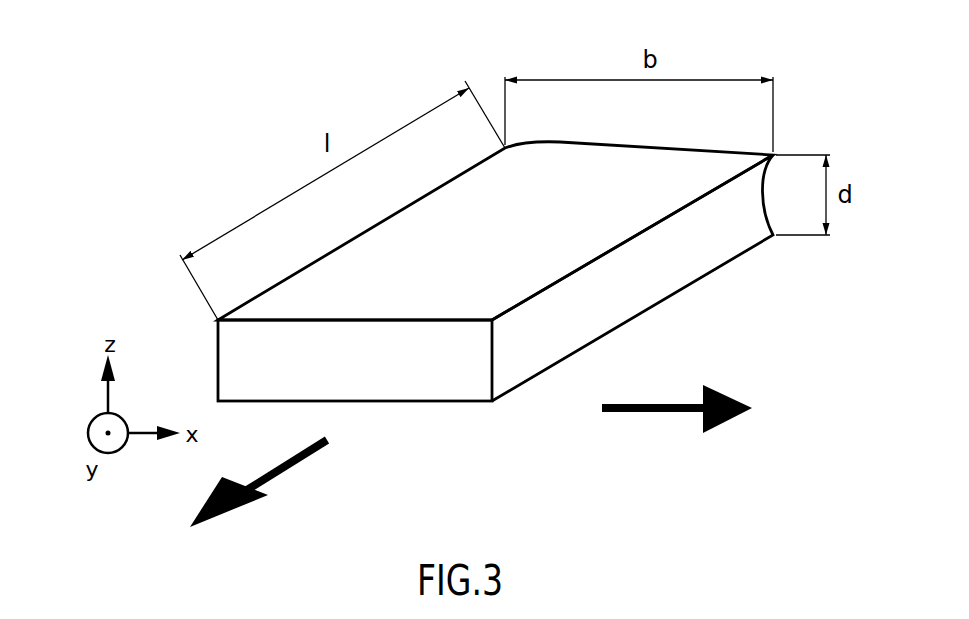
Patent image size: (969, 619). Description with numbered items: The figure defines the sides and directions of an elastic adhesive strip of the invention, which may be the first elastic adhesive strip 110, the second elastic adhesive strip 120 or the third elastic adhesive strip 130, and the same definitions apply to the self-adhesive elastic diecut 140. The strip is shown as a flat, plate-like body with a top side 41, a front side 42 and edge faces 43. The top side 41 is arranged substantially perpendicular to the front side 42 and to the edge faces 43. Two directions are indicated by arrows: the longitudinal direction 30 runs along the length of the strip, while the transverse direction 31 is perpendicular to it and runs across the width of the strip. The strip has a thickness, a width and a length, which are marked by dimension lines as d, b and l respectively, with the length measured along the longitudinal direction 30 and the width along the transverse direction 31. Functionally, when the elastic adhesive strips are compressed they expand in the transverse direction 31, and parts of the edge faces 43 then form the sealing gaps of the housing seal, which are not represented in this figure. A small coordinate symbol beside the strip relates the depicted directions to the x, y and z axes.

The first elastic adhesive strip 110 is at (222, 145).
The second elastic adhesive strip 120 is at (440, 270).
The third elastic adhesive strip 130 is at (460, 270).
The self-adhesive elastic diecut 140 is at (480, 270).
The top side 41 is at (450, 235).
The front side 42 is at (448, 368).
The edge face 43 is at (687, 245).
The longitudinal direction 30 is at (258, 483).
The transverse direction 31 is at (677, 416).